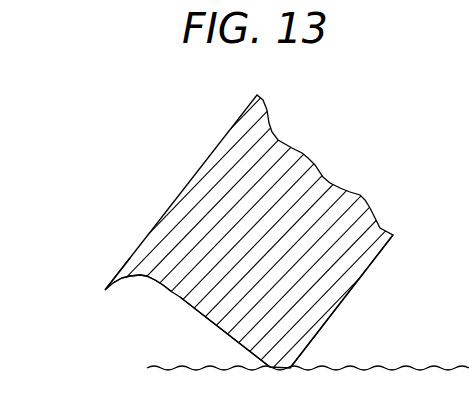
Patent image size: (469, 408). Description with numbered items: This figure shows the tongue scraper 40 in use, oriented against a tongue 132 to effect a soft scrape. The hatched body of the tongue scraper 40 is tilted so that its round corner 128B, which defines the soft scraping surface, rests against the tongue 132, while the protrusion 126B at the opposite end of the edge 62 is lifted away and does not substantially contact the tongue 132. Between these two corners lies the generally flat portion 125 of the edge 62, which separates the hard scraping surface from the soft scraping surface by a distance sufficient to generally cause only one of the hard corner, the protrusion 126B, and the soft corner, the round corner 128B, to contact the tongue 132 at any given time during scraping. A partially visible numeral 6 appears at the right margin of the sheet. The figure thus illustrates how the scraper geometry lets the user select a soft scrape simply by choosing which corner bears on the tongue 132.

The tongue scraper 40 is at (380, 155).
The protrusion 126B is at (105, 290).
The edge 62 is at (127, 318).
The generally flat portion 125 is at (217, 326).
The round corner 128B is at (302, 360).
The tongue 132 is at (370, 366).
The element 6 is at (459, 271).